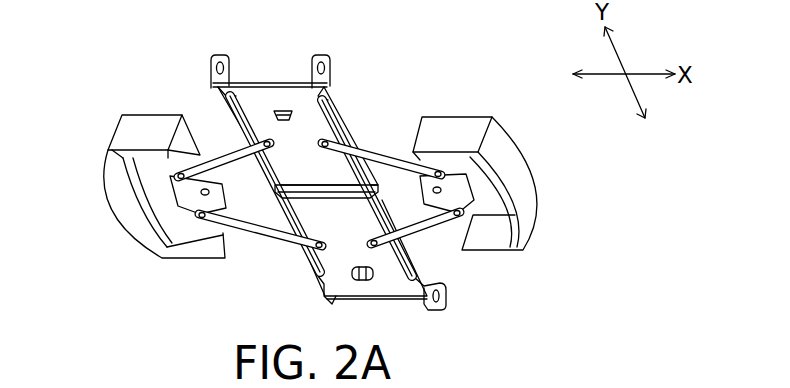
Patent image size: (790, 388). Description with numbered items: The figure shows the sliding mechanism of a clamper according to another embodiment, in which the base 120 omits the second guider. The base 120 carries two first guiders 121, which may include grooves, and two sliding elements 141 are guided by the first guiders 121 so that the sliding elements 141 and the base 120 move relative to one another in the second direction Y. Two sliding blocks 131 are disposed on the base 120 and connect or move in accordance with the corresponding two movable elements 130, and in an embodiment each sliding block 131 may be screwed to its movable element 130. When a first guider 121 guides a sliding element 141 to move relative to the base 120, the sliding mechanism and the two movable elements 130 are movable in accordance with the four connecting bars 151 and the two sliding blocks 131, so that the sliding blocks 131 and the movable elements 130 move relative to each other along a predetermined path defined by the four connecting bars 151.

The base 120 is at (332, 192).
The first guider 121 is at (338, 118).
The movable element 130 is at (137, 208).
The sliding block 131 is at (185, 198).
The sliding element 141 is at (279, 102).
The connecting bar 151 is at (226, 157).